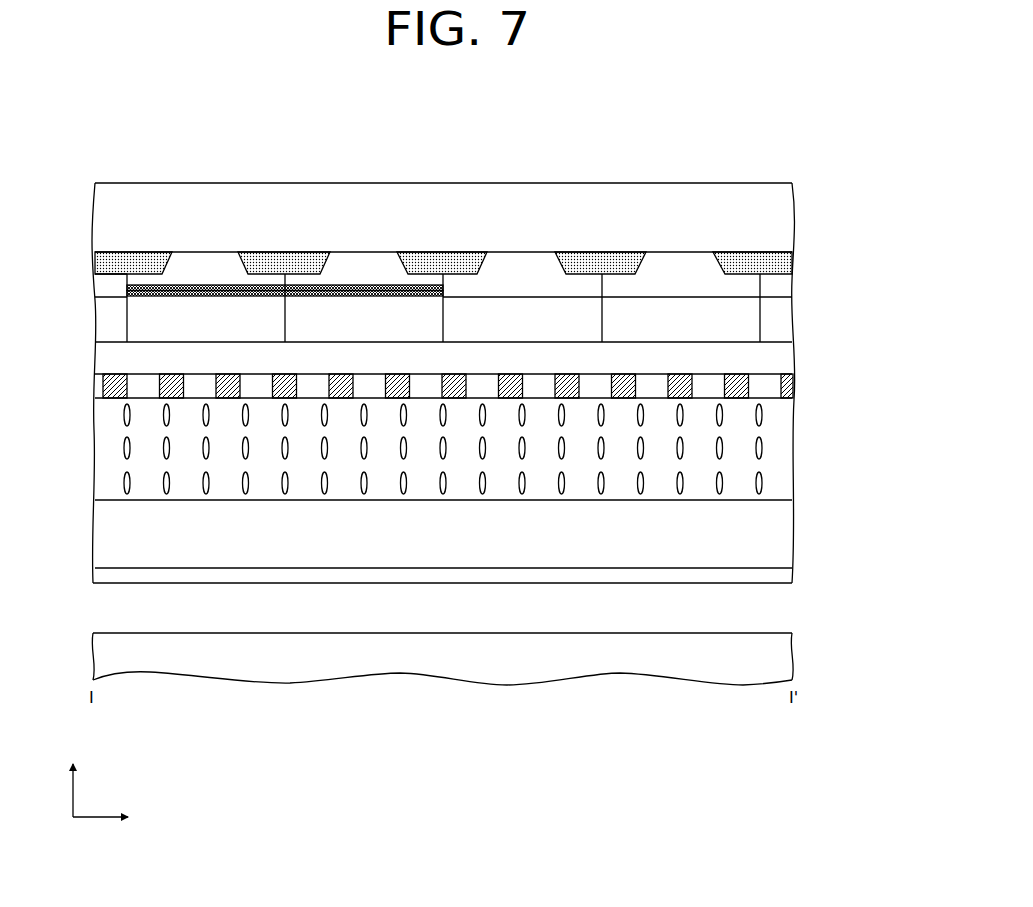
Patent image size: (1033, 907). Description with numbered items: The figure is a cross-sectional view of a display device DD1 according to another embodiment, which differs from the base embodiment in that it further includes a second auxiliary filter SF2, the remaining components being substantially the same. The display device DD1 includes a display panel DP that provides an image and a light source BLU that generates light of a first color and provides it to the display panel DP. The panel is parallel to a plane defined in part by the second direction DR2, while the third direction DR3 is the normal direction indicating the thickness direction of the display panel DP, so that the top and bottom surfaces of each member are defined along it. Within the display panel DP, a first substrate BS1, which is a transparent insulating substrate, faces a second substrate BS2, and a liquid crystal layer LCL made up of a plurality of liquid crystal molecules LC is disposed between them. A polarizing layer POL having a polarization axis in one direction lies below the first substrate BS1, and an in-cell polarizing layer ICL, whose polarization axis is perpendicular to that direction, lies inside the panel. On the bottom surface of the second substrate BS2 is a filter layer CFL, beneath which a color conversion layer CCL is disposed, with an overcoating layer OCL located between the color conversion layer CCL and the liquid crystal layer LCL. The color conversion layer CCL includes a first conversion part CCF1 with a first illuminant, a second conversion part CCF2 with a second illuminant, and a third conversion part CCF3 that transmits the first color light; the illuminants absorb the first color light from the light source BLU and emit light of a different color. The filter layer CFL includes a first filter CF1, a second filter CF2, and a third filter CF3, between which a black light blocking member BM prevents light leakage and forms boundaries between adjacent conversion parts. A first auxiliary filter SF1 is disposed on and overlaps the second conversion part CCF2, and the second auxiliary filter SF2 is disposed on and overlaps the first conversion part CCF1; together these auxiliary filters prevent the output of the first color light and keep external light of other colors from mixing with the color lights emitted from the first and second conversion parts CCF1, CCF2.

The display device DD1 is at (740, 140).
The display panel DP is at (88, 183).
The second substrate BS2 is at (784, 213).
The filter layer CFL is at (800, 272).
The light blocking member BM is at (613, 260).
The first filter CF1 is at (203, 262).
The second filter CF2 is at (377, 262).
The third filter CF3 is at (543, 262).
The first auxiliary filter SF1 is at (425, 285).
The second auxiliary filter SF2 is at (260, 292).
The color conversion layer CCL is at (800, 318).
The first conversion part CCF1 is at (138, 312).
The second conversion part CCF2 is at (313, 312).
The third conversion part CCF3 is at (474, 312).
The overcoating layer OCL is at (784, 356).
The in-cell polarizing layer ICL is at (800, 387).
The liquid crystal layer LCL is at (784, 420).
The liquid crystal molecules LC is at (764, 447).
The first substrate BS1 is at (784, 529).
The polarizing layer POL is at (784, 574).
The light source BLU is at (784, 656).
The third direction DR3 is at (72, 777).
The second direction DR2 is at (120, 818).